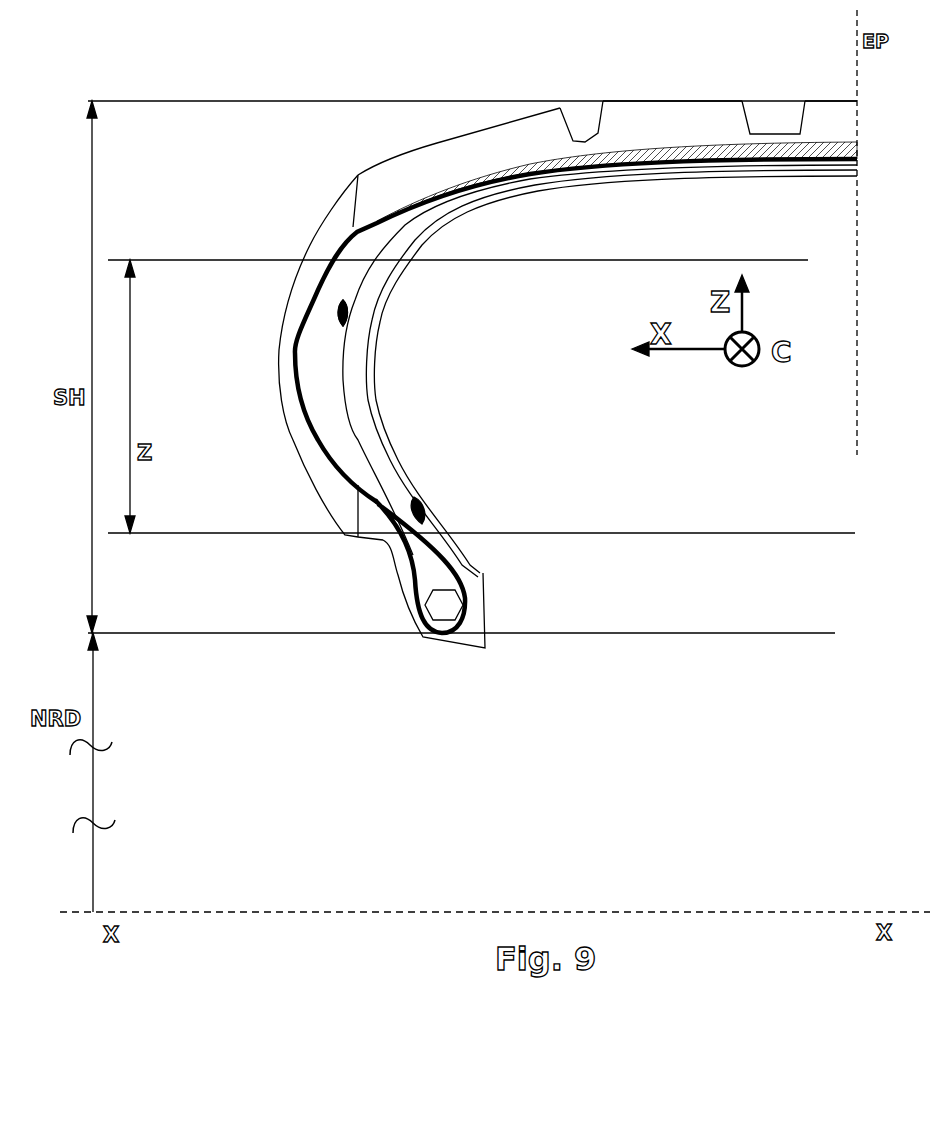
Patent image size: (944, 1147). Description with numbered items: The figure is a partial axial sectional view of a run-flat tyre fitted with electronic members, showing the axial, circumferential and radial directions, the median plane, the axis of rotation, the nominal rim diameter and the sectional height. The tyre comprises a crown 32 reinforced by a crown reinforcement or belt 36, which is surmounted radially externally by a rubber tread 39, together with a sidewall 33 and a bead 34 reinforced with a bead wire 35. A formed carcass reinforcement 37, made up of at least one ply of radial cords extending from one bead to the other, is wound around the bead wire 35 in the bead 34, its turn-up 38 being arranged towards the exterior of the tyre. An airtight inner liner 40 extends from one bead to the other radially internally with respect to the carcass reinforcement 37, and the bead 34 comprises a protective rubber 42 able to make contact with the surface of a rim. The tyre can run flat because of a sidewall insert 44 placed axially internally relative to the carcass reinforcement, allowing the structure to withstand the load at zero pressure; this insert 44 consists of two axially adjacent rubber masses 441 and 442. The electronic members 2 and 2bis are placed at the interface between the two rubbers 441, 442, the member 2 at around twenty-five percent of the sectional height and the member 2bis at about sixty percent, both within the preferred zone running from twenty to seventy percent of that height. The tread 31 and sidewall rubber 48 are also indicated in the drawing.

The electronic member 2 is at (423, 507).
The electronic member 2bis is at (350, 311).
The tread 31 is at (367, 146).
The crown 32 is at (575, 104).
The sidewall 33 is at (264, 367).
The bead 34 is at (378, 567).
The bead wire 35 is at (443, 605).
The crown reinforcement 36 is at (681, 157).
The carcass reinforcement 37 is at (330, 261).
The turn-up 38 is at (410, 553).
The rubber tread 39 is at (655, 125).
The inner liner 40 is at (392, 428).
The protective rubber 42 is at (480, 620).
The sidewall insert 44 is at (340, 352).
The rubber mass 441 is at (366, 290).
The rubber mass 442 is at (365, 467).
The sidewall rubber 48 is at (283, 347).